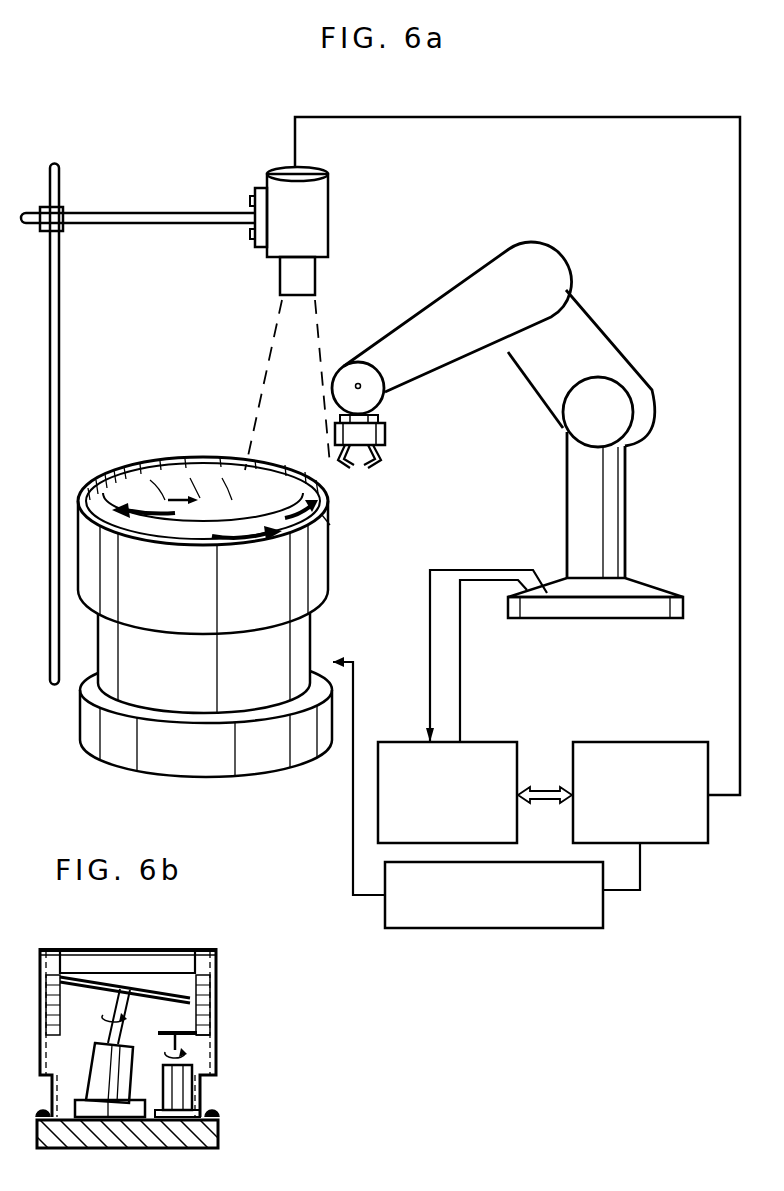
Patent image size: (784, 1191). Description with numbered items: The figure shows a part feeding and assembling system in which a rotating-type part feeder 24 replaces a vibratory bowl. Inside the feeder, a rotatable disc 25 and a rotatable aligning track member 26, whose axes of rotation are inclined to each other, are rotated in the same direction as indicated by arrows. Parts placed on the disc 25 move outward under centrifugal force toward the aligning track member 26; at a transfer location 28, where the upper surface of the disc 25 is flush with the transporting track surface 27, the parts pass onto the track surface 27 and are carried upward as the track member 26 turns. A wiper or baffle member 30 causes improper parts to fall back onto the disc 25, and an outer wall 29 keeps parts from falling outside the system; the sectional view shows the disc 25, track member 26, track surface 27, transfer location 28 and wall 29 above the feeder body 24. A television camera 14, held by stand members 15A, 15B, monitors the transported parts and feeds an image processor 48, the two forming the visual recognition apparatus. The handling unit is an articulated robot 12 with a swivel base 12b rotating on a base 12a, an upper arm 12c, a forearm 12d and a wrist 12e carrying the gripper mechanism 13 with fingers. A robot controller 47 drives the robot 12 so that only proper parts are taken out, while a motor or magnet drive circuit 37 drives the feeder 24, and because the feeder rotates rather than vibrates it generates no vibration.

In FIG. 6a, the robot 12 is at (475, 262).
In FIG. 6a, the base 12a is at (628, 596).
In FIG. 6a, the swivel base 12b is at (627, 505).
In FIG. 6a, the upper arm 12c is at (598, 340).
In FIG. 6a, the forearm 12d is at (470, 350).
In FIG. 6a, the wrist 12e is at (388, 413).
In FIG. 6a, the gripper mechanism 13 is at (380, 462).
In FIG. 6a, the television camera 14 is at (320, 205).
In FIG. 6a, the stand member 15A is at (177, 212).
In FIG. 6a, the stand member 15B is at (57, 292).
In FIG. 6a, the rotating-type part feeder 24 is at (250, 762).
In FIG. 6b, the rotating-type part feeder 24 is at (218, 1132).
In FIG. 6a, the rotatable disc 25 is at (152, 478).
In FIG. 6b, the rotatable disc 25 is at (138, 975).
In FIG. 6a, the rotatable aligning track member 26 is at (192, 476).
In FIG. 6b, the rotatable aligning track member 26 is at (216, 1012).
In FIG. 6a, the transporting track surface 27 is at (222, 476).
In FIG. 6b, the transporting track surface 27 is at (200, 950).
In FIG. 6a, the transfer location 28 is at (80, 512).
In FIG. 6b, the transfer location 28 is at (62, 950).
In FIG. 6a, the outer wall 29 is at (102, 474).
In FIG. 6b, the outer wall 29 is at (218, 960).
In FIG. 6a, the wiper or baffle member 30 is at (328, 527).
In FIG. 6a, the motor or magnet drive circuit 37 is at (604, 905).
In FIG. 6a, the robot controller 47 is at (500, 740).
In FIG. 6a, the image processor 48 is at (665, 740).